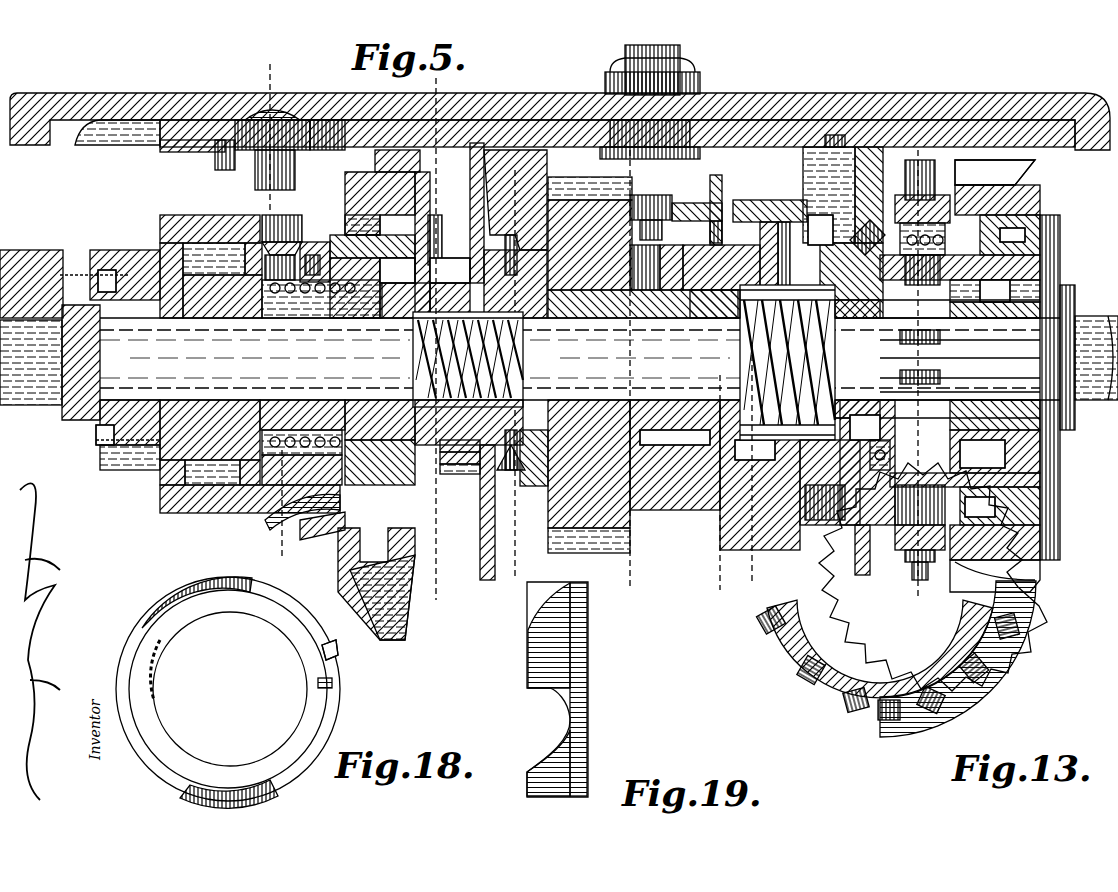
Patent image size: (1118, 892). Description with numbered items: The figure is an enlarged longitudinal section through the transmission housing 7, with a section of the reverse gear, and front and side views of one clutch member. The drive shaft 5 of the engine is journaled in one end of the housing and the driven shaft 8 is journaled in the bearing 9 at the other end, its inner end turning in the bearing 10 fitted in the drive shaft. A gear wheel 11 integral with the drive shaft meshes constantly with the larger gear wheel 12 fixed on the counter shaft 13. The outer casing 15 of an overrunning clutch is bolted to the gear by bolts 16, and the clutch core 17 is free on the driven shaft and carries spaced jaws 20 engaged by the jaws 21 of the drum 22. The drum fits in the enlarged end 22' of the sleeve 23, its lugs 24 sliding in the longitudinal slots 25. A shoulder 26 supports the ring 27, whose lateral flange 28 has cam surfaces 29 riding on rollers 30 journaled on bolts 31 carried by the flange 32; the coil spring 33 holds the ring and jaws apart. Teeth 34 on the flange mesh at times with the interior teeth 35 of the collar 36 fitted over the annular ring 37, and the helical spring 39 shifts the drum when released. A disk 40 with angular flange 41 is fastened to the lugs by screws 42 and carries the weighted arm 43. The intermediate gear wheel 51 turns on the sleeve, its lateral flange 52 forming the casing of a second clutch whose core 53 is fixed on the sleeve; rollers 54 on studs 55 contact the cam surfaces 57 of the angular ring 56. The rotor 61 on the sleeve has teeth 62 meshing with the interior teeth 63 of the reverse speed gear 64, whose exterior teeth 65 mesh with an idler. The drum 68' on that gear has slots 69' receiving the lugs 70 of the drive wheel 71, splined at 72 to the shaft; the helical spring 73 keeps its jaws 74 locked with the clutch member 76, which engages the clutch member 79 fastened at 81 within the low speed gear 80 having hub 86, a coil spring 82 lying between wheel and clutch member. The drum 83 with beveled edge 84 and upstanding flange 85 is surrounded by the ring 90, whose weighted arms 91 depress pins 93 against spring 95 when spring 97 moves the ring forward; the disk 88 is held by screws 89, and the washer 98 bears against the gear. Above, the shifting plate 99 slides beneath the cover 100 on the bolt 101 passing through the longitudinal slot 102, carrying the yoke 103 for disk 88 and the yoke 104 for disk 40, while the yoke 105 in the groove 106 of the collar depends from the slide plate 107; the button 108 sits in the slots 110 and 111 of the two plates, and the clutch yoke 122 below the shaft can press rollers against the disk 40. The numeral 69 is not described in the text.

In FIG. 5, the drive shaft 5 is at (40, 402).
In FIG. 5, the transmission housing 7 is at (272, 64).
In FIG. 5, the driven shaft 8 is at (1082, 326).
In FIG. 5, the bearing 9 is at (436, 80).
In FIG. 5, the bearing 10 is at (92, 420).
In FIG. 5, the gear wheel 11 is at (92, 456).
In FIG. 5, the gear wheel 12 is at (734, 378).
In FIG. 5, the counter shaft 13 is at (736, 349).
In FIG. 5, the outer casing 15 is at (178, 222).
In FIG. 5, the bolts 16 is at (100, 283).
In FIG. 5, the core 17 is at (172, 482).
In FIG. 5, the jaws 20 is at (531, 160).
In FIG. 5, the jaws 21 is at (296, 458).
In FIG. 5, the drum 22 is at (708, 378).
In FIG. 5, the enlarged end 22' is at (453, 240).
In FIG. 5, the sleeve 23 is at (546, 496).
In FIG. 5, the lugs 24 is at (479, 492).
In FIG. 5, the longitudinal slots 25 is at (442, 256).
In FIG. 5, the shoulder 26 is at (396, 382).
In FIG. 5, the ring 27 is at (332, 502).
In FIG. 18, the ring 27 is at (306, 678).
In FIG. 19, the ring 27 is at (590, 698).
In FIG. 5, the lateral flange 28 is at (345, 238).
In FIG. 18, the lateral flange 28 is at (332, 650).
In FIG. 19, the lateral flange 28 is at (546, 649).
In FIG. 18, the cam surfaces 29 is at (324, 722).
In FIG. 19, the cam surfaces 29 is at (542, 762).
In FIG. 5, the rollers 30 is at (268, 240).
In FIG. 5, the bolts 31 is at (288, 214).
In FIG. 5, the flange 32 is at (305, 214).
In FIG. 5, the coil spring 33 is at (280, 466).
In FIG. 5, the teeth 34 is at (306, 542).
In FIG. 5, the interior teeth 35 is at (398, 212).
In FIG. 5, the collar 36 is at (392, 196).
In FIG. 5, the annular ring 37 is at (453, 223).
In FIG. 5, the helical spring 39 is at (412, 345).
In FIG. 5, the disk 40 is at (480, 586).
In FIG. 5, the angular flange 41 is at (524, 492).
In FIG. 5, the screws 42 is at (484, 482).
In FIG. 5, the arcuate weighted arm 43 is at (468, 192).
In FIG. 5, the gear wheel 51 is at (606, 512).
In FIG. 5, the lateral flange 52 is at (690, 518).
In FIG. 5, the core 53 is at (658, 528).
In FIG. 5, the rollers 54 is at (648, 196).
In FIG. 5, the studs 55 is at (660, 222).
In FIG. 5, the angular ring 56 is at (714, 196).
In FIG. 5, the cam surfaces 57 is at (686, 205).
In FIG. 5, the rotor 61 is at (678, 414).
In FIG. 13, the rotor 61 is at (858, 662).
In FIG. 5, the teeth 62 is at (700, 522).
In FIG. 5, the interior teeth 63 is at (736, 204).
In FIG. 13, the interior teeth 63 is at (1022, 646).
In FIG. 5, the reverse speed gear 64 is at (760, 204).
In FIG. 13, the reverse speed gear 64 is at (1020, 660).
In FIG. 5, the exterior teeth 65 is at (802, 532).
In FIG. 13, the exterior teeth 65 is at (1001, 711).
In FIG. 5, the drum 68' is at (818, 159).
In FIG. 5, the screw 69 is at (825, 518).
In FIG. 5, the slots 69' is at (871, 164).
In FIG. 5, the lugs 70 is at (850, 536).
In FIG. 5, the drive wheel 71 is at (820, 222).
In FIG. 5, the splines 72 is at (942, 362).
In FIG. 5, the helical spring 73 is at (694, 349).
In FIG. 5, the jaws 74 is at (938, 400).
In FIG. 5, the clutch member 76 is at (1026, 292).
In FIG. 5, the clutch member 79 is at (1016, 268).
In FIG. 5, the low speed gear 80 is at (1036, 196).
In FIG. 5, the fastening 81 is at (1046, 246).
In FIG. 5, the coil spring 82 is at (1050, 428).
In FIG. 5, the drum 83 is at (1022, 472).
In FIG. 5, the beveled edge 84 is at (870, 542).
In FIG. 5, the upstanding flange 85 is at (1032, 540).
In FIG. 5, the hub 86 is at (1050, 446).
In FIG. 5, the disk 88 is at (862, 580).
In FIG. 5, the screws 89 is at (893, 198).
In FIG. 5, the ring 90 is at (1027, 572).
In FIG. 5, the weighted arcuate arms 91 is at (900, 552).
In FIG. 5, the pins 93 is at (905, 590).
In FIG. 5, the spring 95 is at (920, 562).
In FIG. 5, the spring 97 is at (1006, 226).
In FIG. 5, the washer 98 is at (1056, 262).
In FIG. 5, the shifting plate 99 is at (550, 126).
In FIG. 5, the cover 100 is at (114, 97).
In FIG. 5, the bolt 101 is at (672, 72).
In FIG. 5, the longitudinal slot 102 is at (718, 130).
In FIG. 5, the yoke 103 is at (835, 135).
In FIG. 5, the yoke 104 is at (504, 142).
In FIG. 5, the yoke 105 is at (386, 165).
In FIG. 5, the groove 106 is at (340, 590).
In FIG. 5, the slide plate 107 is at (172, 152).
In FIG. 5, the button 108 is at (252, 128).
In FIG. 5, the slot 110 is at (340, 127).
In FIG. 5, the slot 111 is at (236, 152).
In FIG. 5, the clutch yoke 122 is at (406, 612).